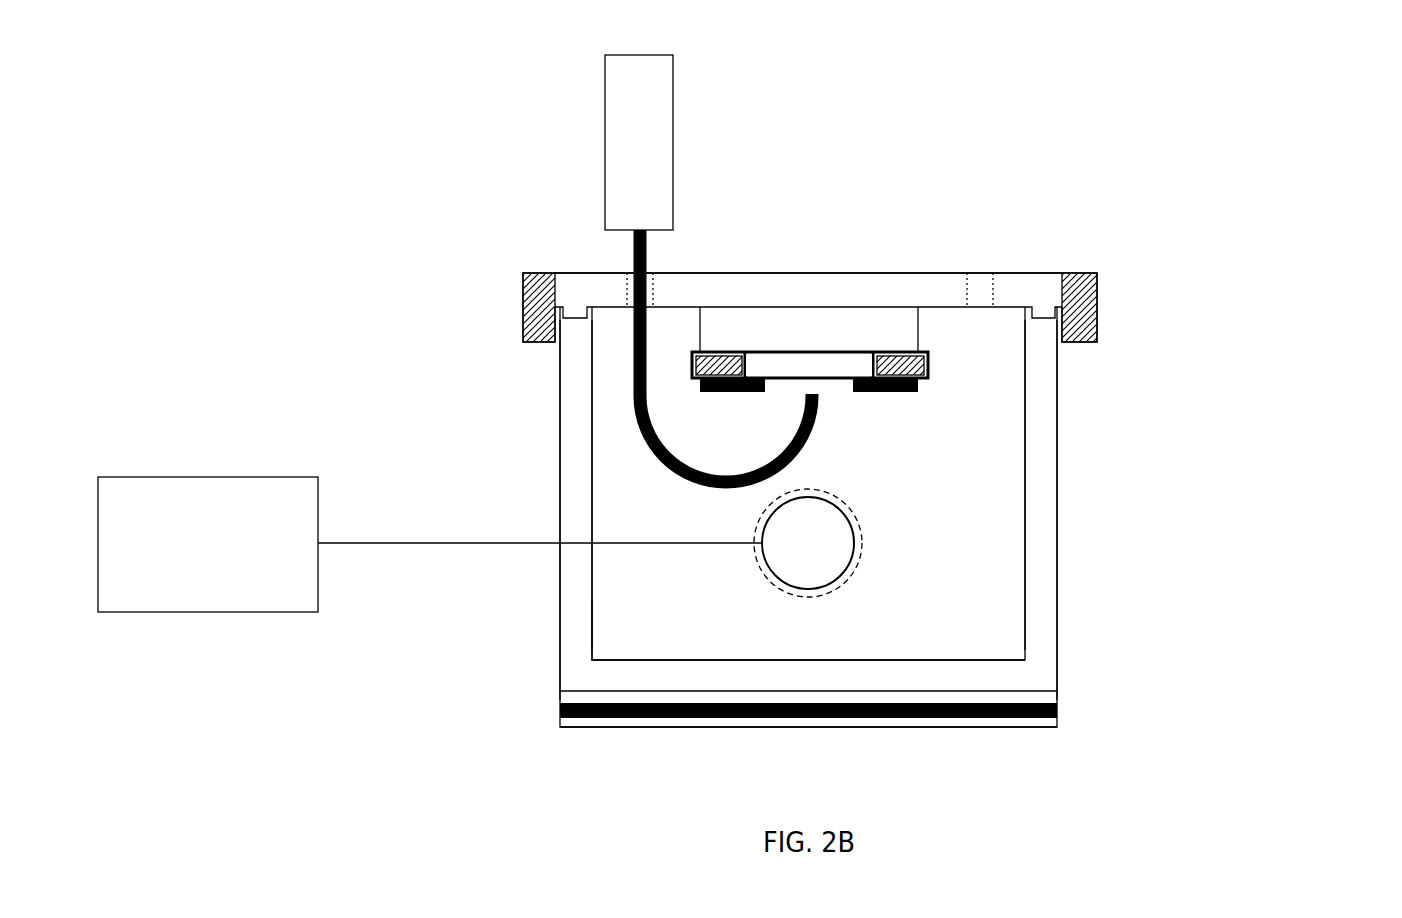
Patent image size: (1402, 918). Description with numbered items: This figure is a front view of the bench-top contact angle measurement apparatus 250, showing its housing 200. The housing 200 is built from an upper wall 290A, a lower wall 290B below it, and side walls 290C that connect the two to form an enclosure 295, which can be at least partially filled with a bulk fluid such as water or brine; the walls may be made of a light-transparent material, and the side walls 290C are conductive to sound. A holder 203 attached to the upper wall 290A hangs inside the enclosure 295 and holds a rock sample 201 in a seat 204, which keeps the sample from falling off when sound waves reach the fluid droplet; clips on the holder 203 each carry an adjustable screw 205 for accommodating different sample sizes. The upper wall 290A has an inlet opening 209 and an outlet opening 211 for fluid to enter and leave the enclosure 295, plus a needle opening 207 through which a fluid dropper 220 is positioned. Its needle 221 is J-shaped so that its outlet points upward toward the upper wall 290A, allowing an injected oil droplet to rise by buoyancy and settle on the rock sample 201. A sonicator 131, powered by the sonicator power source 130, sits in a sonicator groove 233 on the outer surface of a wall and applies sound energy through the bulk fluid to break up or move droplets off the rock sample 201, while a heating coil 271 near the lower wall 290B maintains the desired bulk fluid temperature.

The bench-top contact angle measurement apparatus 250 is at (1054, 762).
The housing 200 is at (1062, 658).
The upper wall 290A is at (770, 272).
The lower wall 290B is at (657, 727).
The side walls 290C is at (560, 440).
The heating coil 271 is at (560, 716).
The enclosure 295 is at (640, 612).
The fluid dropper 220 is at (639, 142).
The needle 221 is at (632, 378).
The needle opening 207 is at (628, 272).
The seat 204 is at (716, 327).
The holder 203 is at (918, 390).
The adjustable screw 205 is at (928, 366).
The rock sample 201 is at (843, 363).
The inlet opening 209 is at (985, 273).
The outlet opening 211 is at (985, 273).
The sonicator 131 is at (782, 532).
The sonicator groove 233 is at (863, 550).
The sonicator power source 130 is at (430, 544).